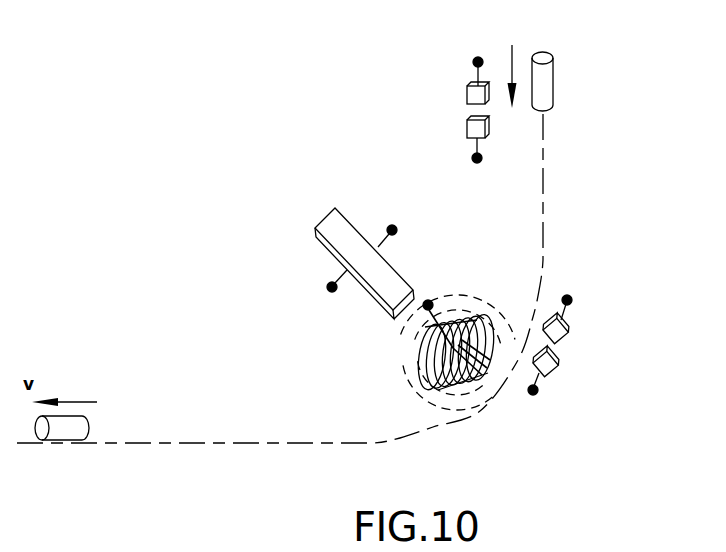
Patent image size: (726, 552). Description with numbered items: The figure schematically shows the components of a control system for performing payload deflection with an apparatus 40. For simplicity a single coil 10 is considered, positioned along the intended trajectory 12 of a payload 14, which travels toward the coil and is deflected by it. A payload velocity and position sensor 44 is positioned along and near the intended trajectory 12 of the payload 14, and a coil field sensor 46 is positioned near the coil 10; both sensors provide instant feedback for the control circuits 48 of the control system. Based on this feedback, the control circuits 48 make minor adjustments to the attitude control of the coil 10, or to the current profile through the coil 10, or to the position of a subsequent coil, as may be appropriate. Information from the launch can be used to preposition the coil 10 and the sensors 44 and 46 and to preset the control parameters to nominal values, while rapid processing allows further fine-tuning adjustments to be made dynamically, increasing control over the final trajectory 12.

The coil 10 is at (420, 343).
The trajectory 12 is at (543, 225).
The payload 14 is at (553, 86).
The apparatus 40 is at (369, 178).
The payload velocity and position sensor 44 is at (467, 90).
The coil field sensor 46 is at (563, 338).
The control circuits 48 is at (328, 257).